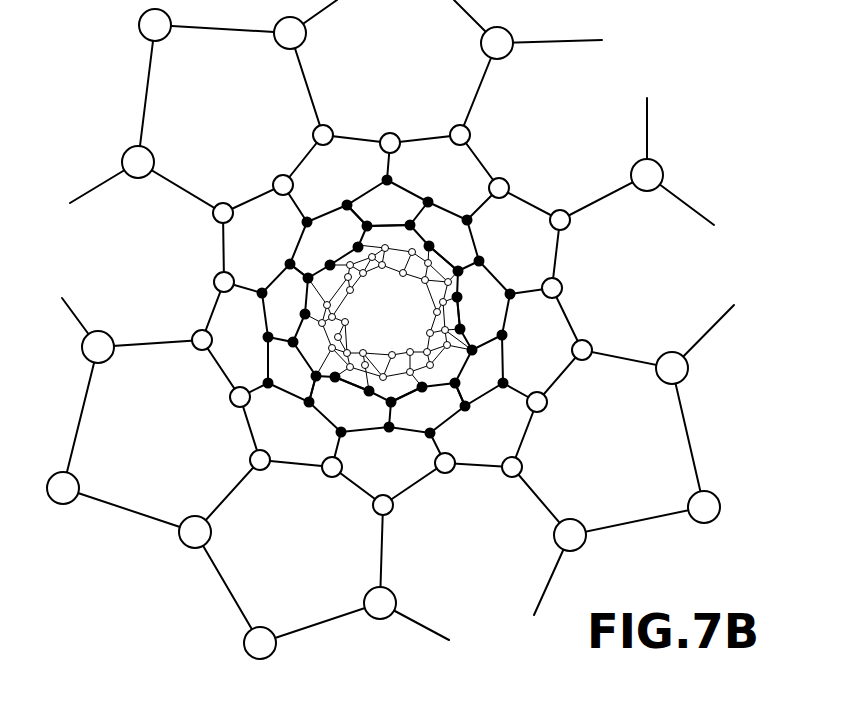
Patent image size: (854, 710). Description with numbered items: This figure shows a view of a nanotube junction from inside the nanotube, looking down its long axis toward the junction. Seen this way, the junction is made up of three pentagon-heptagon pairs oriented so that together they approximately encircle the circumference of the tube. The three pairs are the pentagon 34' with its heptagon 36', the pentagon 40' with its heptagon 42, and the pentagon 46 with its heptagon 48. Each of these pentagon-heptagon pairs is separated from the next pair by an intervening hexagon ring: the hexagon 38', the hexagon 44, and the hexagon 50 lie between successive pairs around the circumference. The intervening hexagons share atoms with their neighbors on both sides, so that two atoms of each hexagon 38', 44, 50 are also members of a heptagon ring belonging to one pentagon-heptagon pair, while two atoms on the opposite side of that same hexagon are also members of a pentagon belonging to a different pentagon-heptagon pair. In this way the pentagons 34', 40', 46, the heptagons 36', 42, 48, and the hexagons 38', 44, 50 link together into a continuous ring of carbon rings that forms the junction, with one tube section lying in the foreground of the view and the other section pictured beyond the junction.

The pentagon 34' is at (340, 193).
The heptagon 36' is at (411, 191).
The hexagon 38' is at (482, 244).
The pentagon 40' is at (512, 322).
The heptagon 42 is at (475, 380).
The hexagon 44 is at (423, 408).
The pentagon 46 is at (347, 402).
The heptagon 48 is at (300, 378).
The hexagon 50 is at (282, 295).